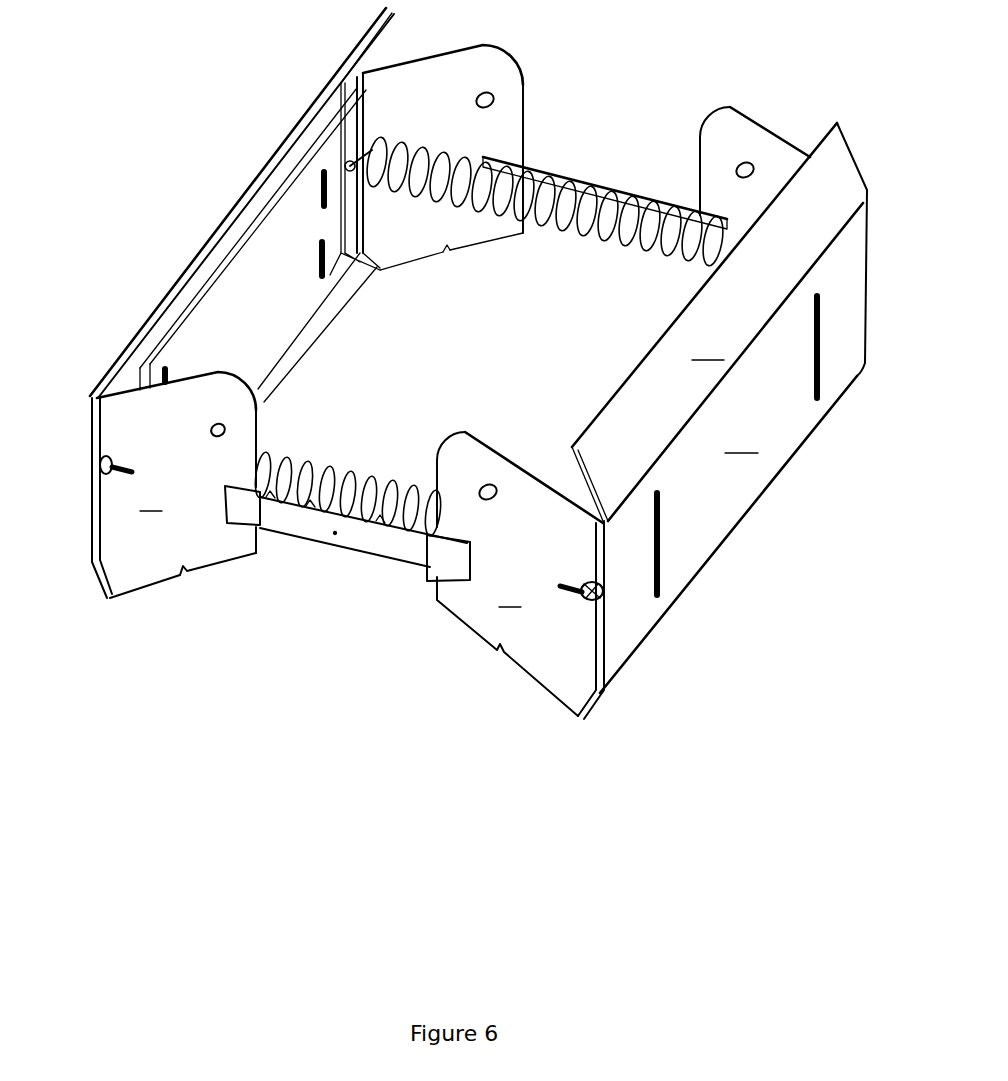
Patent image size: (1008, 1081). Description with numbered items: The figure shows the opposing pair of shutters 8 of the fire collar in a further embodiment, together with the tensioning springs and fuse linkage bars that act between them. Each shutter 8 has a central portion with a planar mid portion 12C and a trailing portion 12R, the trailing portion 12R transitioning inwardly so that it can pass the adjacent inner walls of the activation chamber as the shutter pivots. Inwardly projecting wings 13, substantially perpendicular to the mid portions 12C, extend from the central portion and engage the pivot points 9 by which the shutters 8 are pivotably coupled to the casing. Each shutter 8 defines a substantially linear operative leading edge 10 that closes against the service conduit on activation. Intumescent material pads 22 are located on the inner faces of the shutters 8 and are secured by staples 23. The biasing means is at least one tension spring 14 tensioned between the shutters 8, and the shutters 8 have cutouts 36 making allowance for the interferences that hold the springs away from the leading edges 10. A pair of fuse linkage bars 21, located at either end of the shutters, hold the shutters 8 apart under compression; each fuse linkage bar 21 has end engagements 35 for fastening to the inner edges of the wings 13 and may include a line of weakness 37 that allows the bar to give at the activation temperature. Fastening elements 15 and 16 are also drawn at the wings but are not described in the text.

The shutter 8 is at (464, 408).
The pivot point 9 is at (487, 103).
The operative leading edge 10 is at (316, 328).
The trailing portion 12R is at (717, 322).
The planar mid portion 12C is at (866, 270).
The inwardly projecting wing 13 is at (348, 545).
The tension spring 14 is at (600, 197).
The bolt 15 is at (92, 470).
The nut 16 is at (133, 465).
The fuse linkage bar 21 is at (565, 180).
The intumescent material pad 22 is at (242, 203).
The staple 23 is at (822, 340).
The end engagement 35 is at (226, 503).
The cutout 36 is at (450, 253).
The line of weakness 37 is at (383, 552).